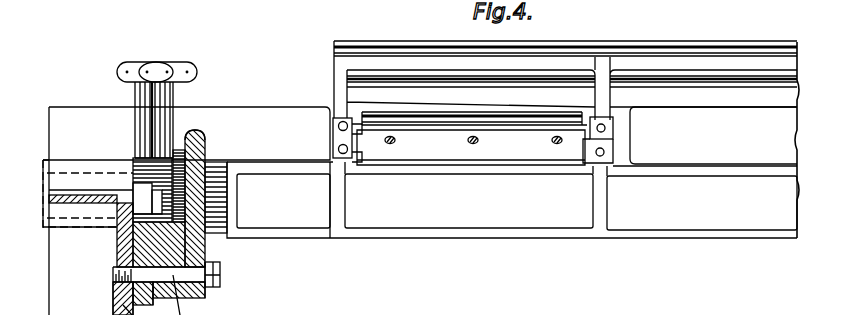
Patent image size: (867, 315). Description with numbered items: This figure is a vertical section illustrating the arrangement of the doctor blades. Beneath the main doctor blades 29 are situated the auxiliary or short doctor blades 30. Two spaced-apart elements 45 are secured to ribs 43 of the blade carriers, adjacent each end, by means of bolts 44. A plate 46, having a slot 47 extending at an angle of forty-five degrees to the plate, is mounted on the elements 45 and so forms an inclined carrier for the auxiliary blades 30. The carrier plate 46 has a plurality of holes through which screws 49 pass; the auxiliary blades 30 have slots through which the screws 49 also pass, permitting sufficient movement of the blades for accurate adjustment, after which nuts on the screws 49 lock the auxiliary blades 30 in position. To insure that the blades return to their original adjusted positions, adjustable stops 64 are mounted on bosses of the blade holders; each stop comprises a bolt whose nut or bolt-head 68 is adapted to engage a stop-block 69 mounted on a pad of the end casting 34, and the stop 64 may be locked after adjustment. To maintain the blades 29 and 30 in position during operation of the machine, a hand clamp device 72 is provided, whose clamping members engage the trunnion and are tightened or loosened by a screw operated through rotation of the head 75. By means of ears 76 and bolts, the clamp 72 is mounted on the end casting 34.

The main doctor blades 29 is at (667, 53).
The auxiliary doctor blades 30 is at (437, 120).
The end casting 34 is at (117, 303).
The ribs 43 is at (600, 80).
The bolts 44 is at (338, 125).
The spaced-apart elements 45 is at (342, 135).
The plate 46 is at (515, 147).
The slot 47 is at (371, 148).
The screws 49 is at (473, 144).
The adjustable stops 64 is at (207, 142).
The nuts or bolt-heads 68 is at (197, 137).
The stop-block 69 is at (216, 184).
The hand clamp device 72 is at (167, 100).
The head 75 is at (152, 66).
The ears 76 is at (141, 188).